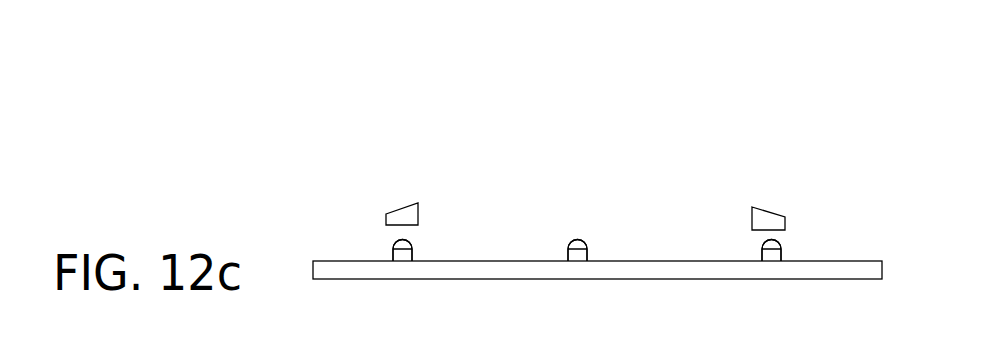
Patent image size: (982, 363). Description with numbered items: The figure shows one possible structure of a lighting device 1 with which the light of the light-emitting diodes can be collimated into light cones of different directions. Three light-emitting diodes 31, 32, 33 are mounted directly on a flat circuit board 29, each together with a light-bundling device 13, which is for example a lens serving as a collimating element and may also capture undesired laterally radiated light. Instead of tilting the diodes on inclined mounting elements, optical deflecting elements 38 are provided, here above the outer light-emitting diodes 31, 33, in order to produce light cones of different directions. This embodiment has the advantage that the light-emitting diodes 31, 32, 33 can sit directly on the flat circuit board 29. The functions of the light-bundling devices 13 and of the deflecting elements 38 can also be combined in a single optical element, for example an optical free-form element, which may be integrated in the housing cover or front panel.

The lighting device 1 is at (295, 87).
The light-bundling device 13 is at (410, 240).
The flat circuit board 29 is at (695, 280).
The light-emitting diode 31 is at (393, 252).
The light-emitting diode 32 is at (567, 252).
The light-emitting diode 33 is at (761, 252).
The optical deflecting element 38 is at (408, 205).